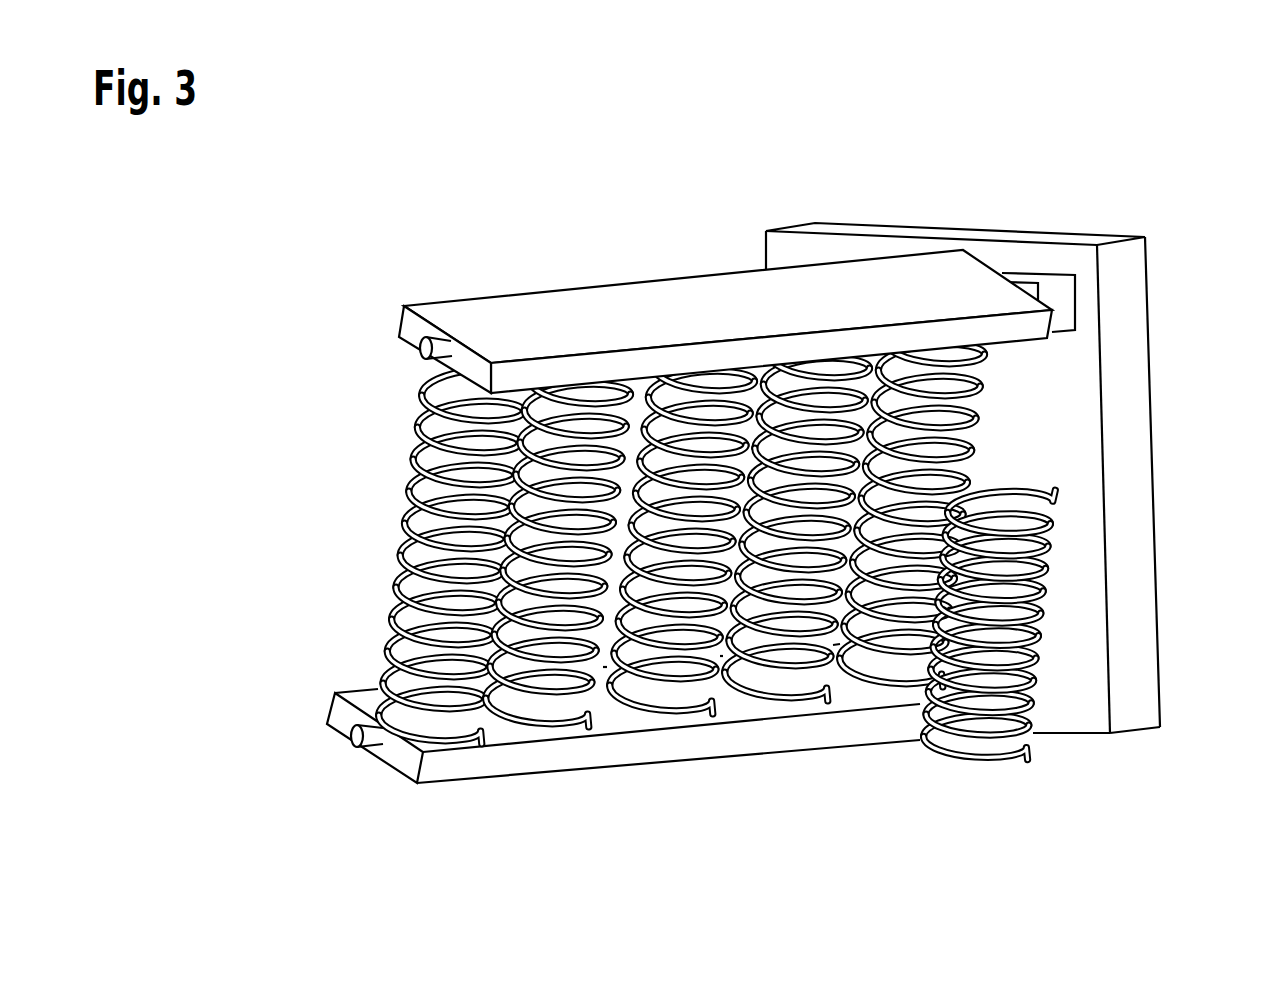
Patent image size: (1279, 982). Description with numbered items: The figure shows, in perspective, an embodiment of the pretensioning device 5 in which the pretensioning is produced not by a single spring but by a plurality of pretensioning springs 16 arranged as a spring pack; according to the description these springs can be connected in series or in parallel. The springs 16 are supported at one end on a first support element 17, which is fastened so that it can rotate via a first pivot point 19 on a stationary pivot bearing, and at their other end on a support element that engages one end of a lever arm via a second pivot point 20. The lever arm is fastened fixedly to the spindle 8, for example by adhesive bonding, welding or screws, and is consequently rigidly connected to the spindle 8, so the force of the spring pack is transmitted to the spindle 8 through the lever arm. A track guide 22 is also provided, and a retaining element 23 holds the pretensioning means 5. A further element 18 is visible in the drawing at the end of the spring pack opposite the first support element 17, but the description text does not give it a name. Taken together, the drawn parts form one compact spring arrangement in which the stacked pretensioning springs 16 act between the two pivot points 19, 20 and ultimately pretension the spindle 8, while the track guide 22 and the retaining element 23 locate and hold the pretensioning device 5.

The pretensioning device 5 is at (645, 522).
The spindle 8 is at (1004, 478).
The pretensioning spring 16 is at (665, 584).
The first support element 17 is at (577, 713).
The upper plate 18 is at (678, 323).
The first pivot point 19 is at (352, 742).
The second pivot point 20 is at (424, 355).
The track guide 22 is at (1060, 304).
The retaining element 23 is at (1126, 372).